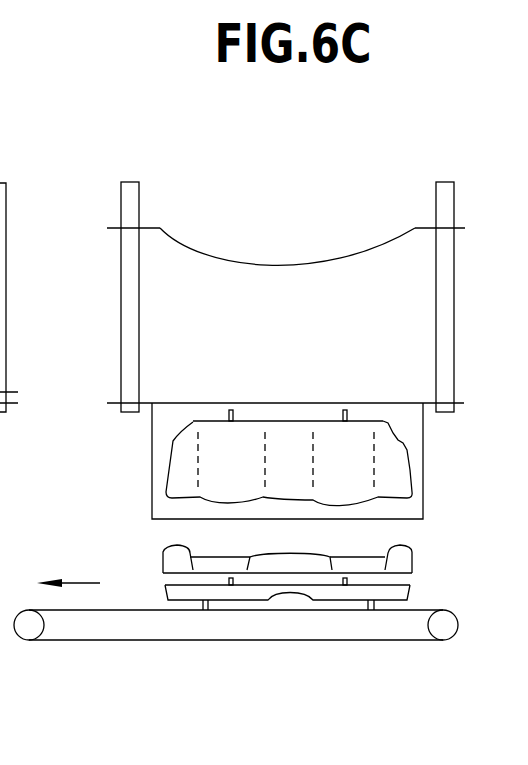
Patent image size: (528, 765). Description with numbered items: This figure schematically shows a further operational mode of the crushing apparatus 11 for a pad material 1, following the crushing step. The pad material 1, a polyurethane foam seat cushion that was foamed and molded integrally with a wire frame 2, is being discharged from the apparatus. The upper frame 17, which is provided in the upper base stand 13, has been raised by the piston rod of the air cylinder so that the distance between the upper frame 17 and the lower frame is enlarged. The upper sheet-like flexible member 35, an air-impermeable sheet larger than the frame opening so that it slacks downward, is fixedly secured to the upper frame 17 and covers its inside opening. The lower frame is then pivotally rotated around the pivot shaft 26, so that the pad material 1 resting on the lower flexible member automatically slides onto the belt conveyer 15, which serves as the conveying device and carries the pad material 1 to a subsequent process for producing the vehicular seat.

The pad material 1 is at (442, 557).
The wire frame 2 is at (198, 470).
The crushing apparatus 11 is at (152, 166).
The upper base stand 13 is at (445, 326).
The belt conveyer 15 is at (135, 642).
The upper frame 17 is at (420, 228).
The pivot shaft 26 is at (410, 421).
The upper sheet-like flexible member 35 is at (292, 265).